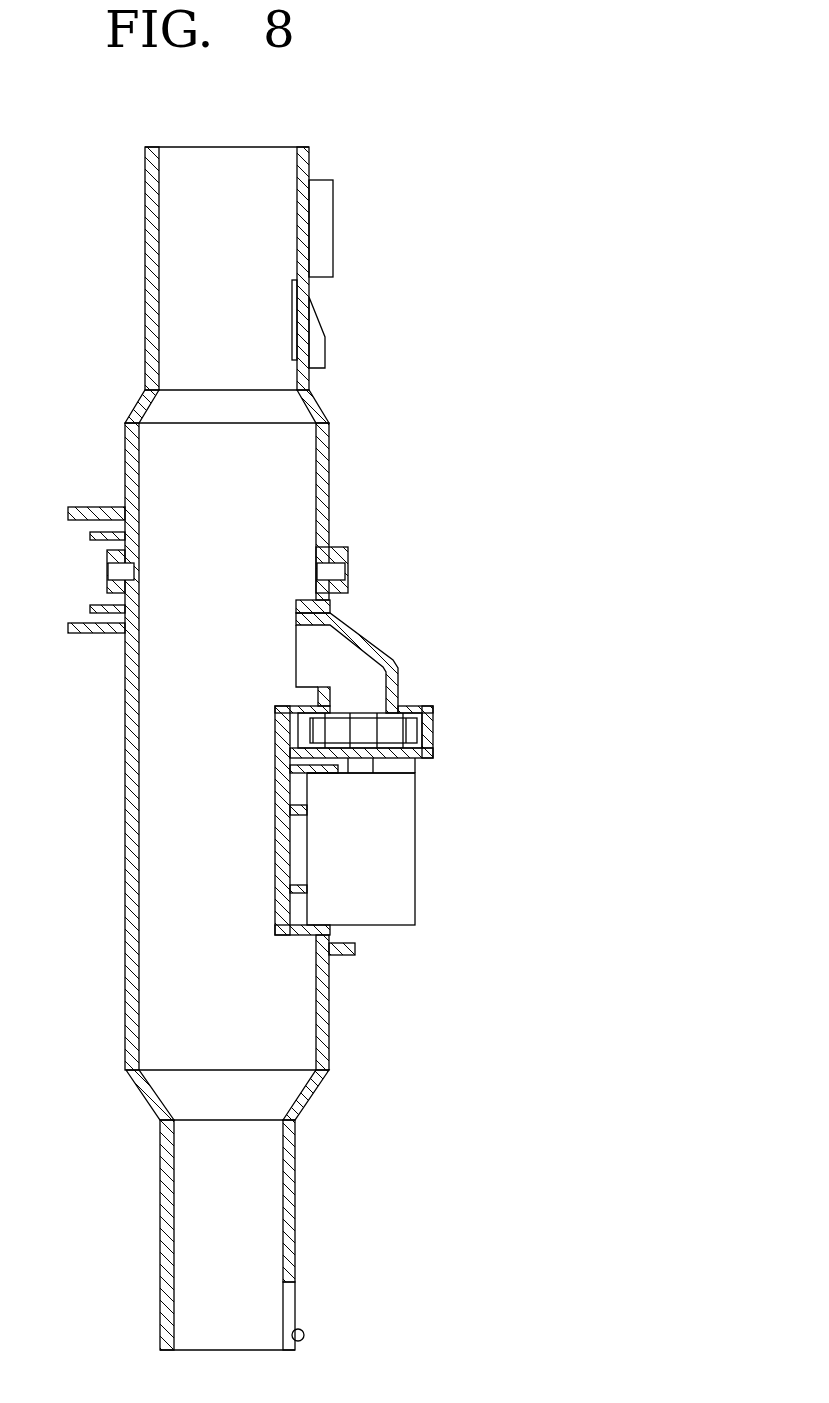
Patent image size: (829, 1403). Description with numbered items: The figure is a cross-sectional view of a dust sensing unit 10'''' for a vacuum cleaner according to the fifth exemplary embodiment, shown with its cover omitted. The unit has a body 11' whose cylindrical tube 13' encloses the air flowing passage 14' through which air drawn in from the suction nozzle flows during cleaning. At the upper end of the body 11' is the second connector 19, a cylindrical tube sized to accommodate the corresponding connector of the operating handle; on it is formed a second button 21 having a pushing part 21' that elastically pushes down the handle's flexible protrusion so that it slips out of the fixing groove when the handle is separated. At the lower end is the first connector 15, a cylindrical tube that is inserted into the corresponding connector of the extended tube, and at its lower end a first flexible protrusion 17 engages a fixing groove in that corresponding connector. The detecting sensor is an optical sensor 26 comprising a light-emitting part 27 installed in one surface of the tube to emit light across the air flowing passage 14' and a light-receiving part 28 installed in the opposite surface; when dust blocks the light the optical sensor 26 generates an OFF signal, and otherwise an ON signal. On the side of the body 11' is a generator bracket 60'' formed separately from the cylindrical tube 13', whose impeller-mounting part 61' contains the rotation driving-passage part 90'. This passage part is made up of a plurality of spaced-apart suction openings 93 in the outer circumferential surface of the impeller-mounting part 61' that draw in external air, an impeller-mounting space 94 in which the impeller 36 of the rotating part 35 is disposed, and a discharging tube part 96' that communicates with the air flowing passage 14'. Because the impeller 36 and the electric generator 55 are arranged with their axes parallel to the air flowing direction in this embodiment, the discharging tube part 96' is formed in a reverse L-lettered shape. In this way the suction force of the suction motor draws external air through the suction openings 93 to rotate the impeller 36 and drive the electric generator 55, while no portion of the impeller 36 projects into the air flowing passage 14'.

The dust sensing unit 10'''' is at (156, 165).
The second connector 19 is at (145, 272).
The second button 21 is at (353, 274).
The pushing part 21' is at (343, 306).
The optical sensor 26 is at (265, 537).
The light-emitting part 27 is at (340, 548).
The light-receiving part 28 is at (120, 570).
The body 11' is at (184, 746).
The cylindrical tube 13' is at (184, 746).
The air flowing passage 14' is at (184, 746).
The rotation driving-passage part 90' is at (429, 764).
The discharging tube part 96' is at (395, 653).
The impeller-mounting space 94 is at (426, 706).
The suction openings 93 is at (433, 728).
The rotating part 35 is at (438, 752).
The generator bracket 60'' is at (405, 801).
The impeller-mounting part 61' is at (375, 819).
The electric generator 55 is at (398, 895).
The impeller 36 is at (322, 748).
The first connector 15 is at (160, 1240).
The first flexible protrusion 17 is at (305, 1336).